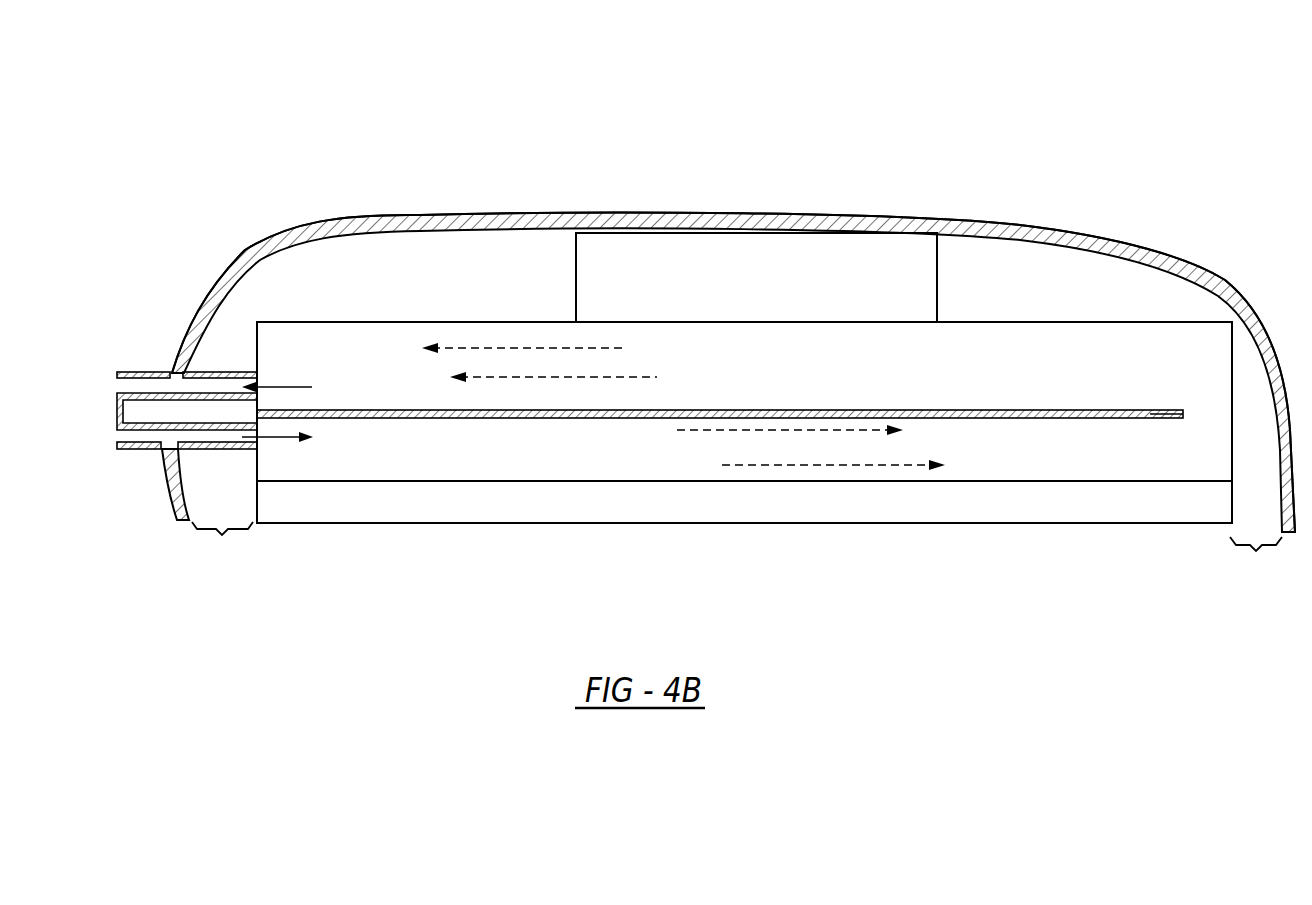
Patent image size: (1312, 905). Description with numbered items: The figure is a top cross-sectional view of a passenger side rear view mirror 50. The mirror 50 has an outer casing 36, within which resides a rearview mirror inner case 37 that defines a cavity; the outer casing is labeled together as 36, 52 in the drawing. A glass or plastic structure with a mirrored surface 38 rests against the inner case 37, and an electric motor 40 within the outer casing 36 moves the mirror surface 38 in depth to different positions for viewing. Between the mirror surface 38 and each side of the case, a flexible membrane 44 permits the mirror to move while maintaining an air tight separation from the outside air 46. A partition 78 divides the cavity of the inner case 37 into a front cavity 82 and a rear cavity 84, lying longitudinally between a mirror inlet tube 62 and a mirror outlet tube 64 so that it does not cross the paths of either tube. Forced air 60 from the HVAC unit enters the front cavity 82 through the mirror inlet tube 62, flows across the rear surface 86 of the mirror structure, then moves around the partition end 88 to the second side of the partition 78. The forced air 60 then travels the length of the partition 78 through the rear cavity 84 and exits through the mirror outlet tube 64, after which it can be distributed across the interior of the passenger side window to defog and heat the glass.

The passenger side rear view mirror 50 is at (238, 145).
The outer casing 36 is at (228, 268).
The cover wall 52 is at (1060, 225).
The mirror outlet tube 64 is at (220, 372).
The mirror inlet tube 62 is at (205, 449).
The rearview mirror inner case 37 is at (1102, 322).
The mirror surface 38 is at (678, 524).
The electric motor 40 is at (937, 272).
The partition 78 is at (1012, 413).
The partition end 88 is at (1183, 413).
The rear surface 86 is at (1062, 481).
The forced air 60 is at (292, 387).
The front cavity 82 is at (493, 463).
The rear cavity 84 is at (896, 381).
The outside air 46 is at (963, 649).
The flexible membrane 44 is at (222, 536).